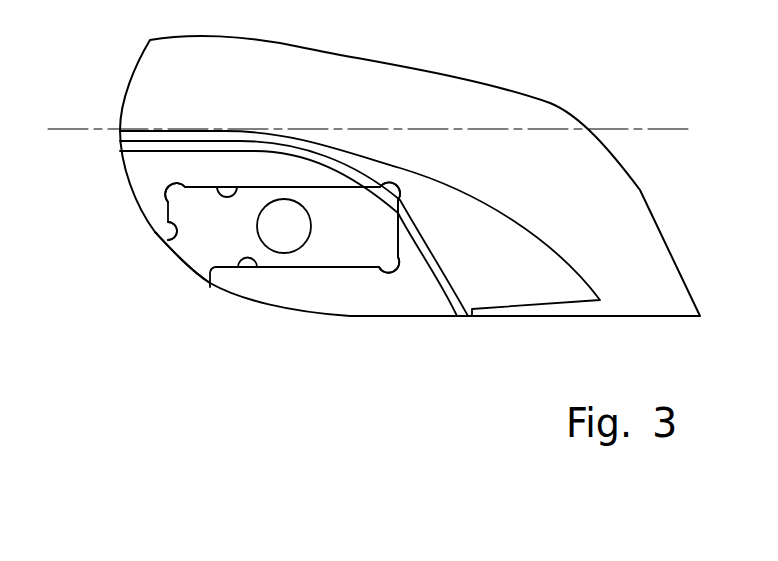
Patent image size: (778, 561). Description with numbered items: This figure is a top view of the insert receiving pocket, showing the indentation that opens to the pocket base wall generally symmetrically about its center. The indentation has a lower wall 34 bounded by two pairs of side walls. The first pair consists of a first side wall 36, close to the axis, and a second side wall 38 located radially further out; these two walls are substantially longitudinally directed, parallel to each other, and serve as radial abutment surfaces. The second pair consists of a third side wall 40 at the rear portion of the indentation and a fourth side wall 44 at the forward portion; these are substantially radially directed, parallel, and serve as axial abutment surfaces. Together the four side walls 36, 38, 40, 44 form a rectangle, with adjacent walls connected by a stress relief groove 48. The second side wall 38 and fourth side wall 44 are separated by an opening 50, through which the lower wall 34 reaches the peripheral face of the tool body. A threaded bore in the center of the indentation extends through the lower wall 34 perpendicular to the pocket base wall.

The lower wall 34 is at (330, 234).
The first side wall 36 is at (218, 186).
The second side wall 38 is at (248, 262).
The third side wall 40 is at (396, 240).
The fourth side wall 44 is at (170, 250).
The stress relief groove 48 is at (380, 186).
The opening 50 is at (192, 262).